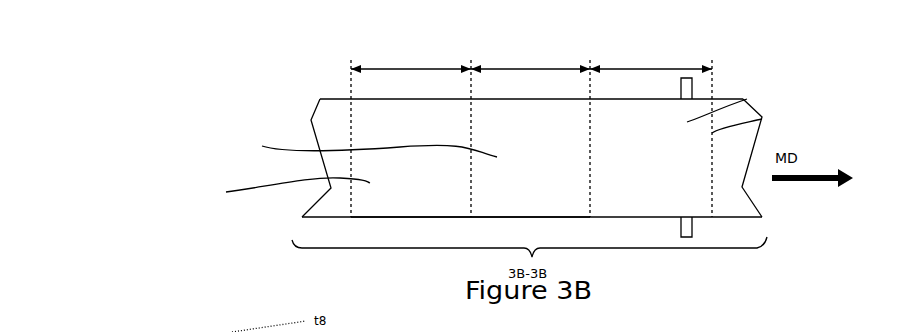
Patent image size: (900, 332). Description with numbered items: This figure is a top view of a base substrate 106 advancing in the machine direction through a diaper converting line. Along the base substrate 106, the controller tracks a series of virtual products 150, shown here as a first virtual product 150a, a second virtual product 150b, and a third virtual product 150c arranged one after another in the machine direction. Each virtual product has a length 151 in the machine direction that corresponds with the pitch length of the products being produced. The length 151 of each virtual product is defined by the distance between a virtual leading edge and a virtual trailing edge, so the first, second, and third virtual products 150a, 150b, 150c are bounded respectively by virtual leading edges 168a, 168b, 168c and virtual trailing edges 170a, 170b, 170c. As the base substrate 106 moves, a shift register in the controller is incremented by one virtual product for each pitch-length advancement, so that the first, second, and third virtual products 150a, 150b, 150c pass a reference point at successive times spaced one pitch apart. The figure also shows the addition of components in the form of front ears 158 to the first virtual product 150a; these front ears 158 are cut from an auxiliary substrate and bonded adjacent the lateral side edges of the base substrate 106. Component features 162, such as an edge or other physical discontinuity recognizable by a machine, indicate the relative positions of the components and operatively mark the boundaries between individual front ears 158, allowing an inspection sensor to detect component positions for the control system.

The base substrate 106 is at (328, 207).
The virtual products 150 is at (532, 158).
The first virtual product 150a is at (745, 100).
The second virtual product 150b is at (334, 139).
The third virtual product 150c is at (255, 187).
The length of virtual product 151 is at (415, 68).
The front ears 158 is at (692, 90).
The component feature 162 is at (693, 80).
The virtual leading edge of first virtual product 168a is at (762, 119).
The virtual leading edge of second virtual product 168b is at (590, 198).
The virtual leading edge of third virtual product 168c is at (470, 195).
The virtual trailing edge of first virtual product 170a is at (591, 160).
The virtual trailing edge of second virtual product 170b is at (473, 127).
The virtual trailing edge of third virtual product 170c is at (353, 122).